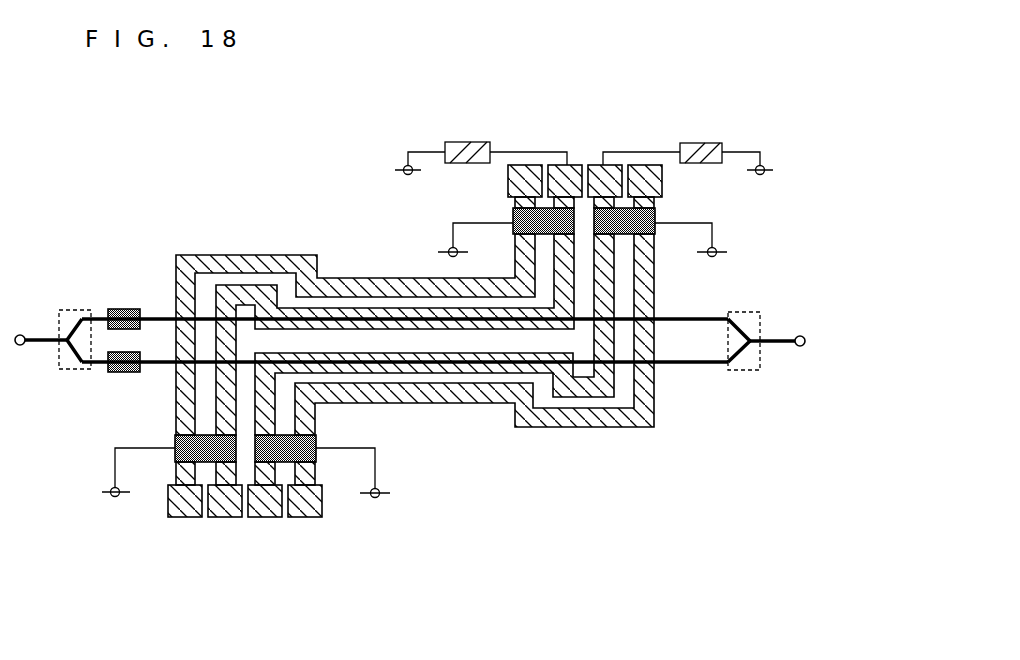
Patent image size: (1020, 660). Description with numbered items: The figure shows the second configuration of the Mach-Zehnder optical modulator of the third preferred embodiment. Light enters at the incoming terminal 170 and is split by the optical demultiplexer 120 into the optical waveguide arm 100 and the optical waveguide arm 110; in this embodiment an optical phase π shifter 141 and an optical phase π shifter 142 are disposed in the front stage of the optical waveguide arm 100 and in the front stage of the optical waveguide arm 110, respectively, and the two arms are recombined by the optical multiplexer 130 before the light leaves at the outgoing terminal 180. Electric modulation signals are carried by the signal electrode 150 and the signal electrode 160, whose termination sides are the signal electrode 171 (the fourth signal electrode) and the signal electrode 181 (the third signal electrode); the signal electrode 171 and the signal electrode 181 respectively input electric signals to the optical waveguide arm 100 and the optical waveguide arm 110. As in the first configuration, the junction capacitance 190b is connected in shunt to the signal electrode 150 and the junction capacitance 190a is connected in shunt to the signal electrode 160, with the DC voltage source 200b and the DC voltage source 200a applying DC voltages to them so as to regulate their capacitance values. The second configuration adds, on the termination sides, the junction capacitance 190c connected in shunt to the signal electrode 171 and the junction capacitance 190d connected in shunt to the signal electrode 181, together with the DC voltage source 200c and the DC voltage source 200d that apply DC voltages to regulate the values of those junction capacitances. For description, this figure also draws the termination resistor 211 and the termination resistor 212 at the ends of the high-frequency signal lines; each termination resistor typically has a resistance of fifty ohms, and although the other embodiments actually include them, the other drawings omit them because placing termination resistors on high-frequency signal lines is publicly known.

The optical waveguide arm 100 is at (680, 317).
The optical waveguide arm 110 is at (680, 365).
The optical demultiplexer 120 is at (73, 310).
The optical multiplexer 130 is at (742, 312).
The optical phase π shifter 141 is at (125, 309).
The optical phase π shifter 142 is at (118, 372).
The signal electrode 150 is at (242, 588).
The signal electrode 160 is at (322, 588).
The incoming terminal 170 is at (21, 334).
The signal electrode 171 is at (580, 74).
The outgoing terminal 180 is at (800, 336).
The signal electrode 181 is at (660, 74).
The junction capacitance 190a is at (317, 441).
The junction capacitance 190b is at (175, 446).
The junction capacitance 190c is at (513, 216).
The junction capacitance 190d is at (656, 219).
The DC voltage source 200a is at (380, 490).
The DC voltage source 200b is at (110, 490).
The DC voltage source 200c is at (449, 250).
The DC voltage source 200d is at (716, 250).
The termination resistor 211 is at (460, 142).
The termination resistor 212 is at (708, 143).